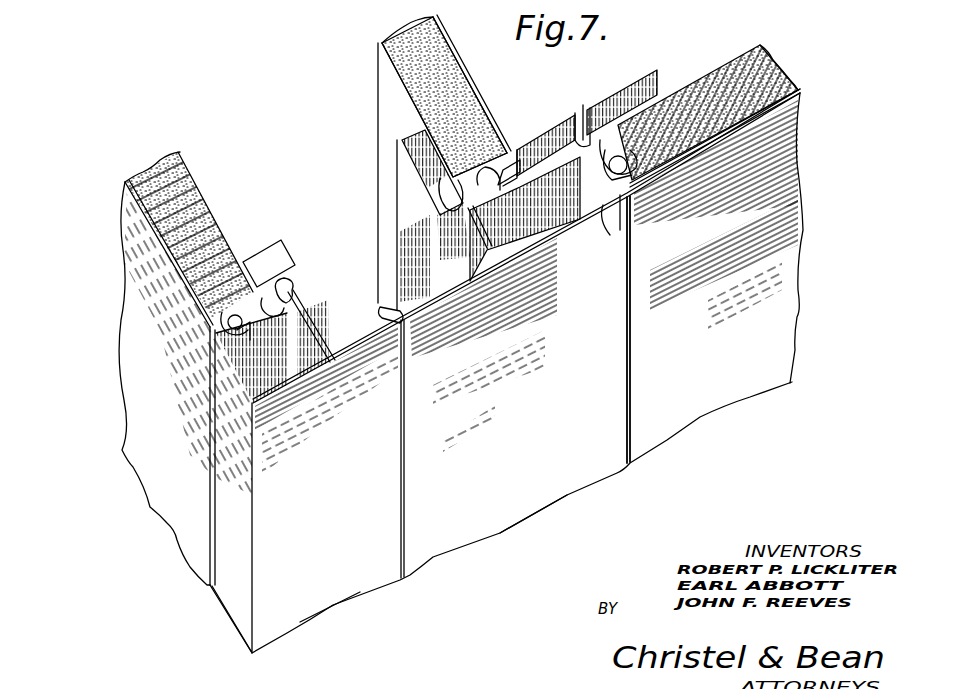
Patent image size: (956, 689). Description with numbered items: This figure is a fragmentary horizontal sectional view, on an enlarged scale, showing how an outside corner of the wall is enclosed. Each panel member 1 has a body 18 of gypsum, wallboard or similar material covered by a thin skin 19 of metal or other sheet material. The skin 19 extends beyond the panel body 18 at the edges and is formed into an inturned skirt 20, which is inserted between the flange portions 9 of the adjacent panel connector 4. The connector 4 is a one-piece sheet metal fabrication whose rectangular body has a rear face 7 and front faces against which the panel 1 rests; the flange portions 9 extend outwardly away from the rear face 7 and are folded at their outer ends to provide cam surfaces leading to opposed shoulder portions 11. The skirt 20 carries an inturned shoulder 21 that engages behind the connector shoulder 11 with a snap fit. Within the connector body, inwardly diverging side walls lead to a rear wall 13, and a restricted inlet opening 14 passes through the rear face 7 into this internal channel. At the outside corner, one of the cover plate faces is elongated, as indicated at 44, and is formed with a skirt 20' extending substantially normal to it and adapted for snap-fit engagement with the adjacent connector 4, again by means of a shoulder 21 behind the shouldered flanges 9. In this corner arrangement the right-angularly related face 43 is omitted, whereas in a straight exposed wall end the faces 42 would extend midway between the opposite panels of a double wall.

The panel member 1 is at (456, 50).
The panel connector 4 is at (408, 176).
The rear face 7 is at (313, 340).
The flange portion 9 is at (280, 348).
The shoulder portion 11 is at (503, 197).
The rear wall 13 is at (447, 197).
The restricted inlet opening 14 is at (578, 115).
The panel body 18 is at (410, 68).
The skin 19 is at (477, 93).
The inturned skirt 20 is at (412, 253).
The skirt 20' is at (600, 244).
The inturned shoulder 21 is at (632, 158).
The cover plate face 42 is at (317, 607).
The cover plate face 43 is at (232, 615).
The elongated cover plate face 44 is at (525, 523).